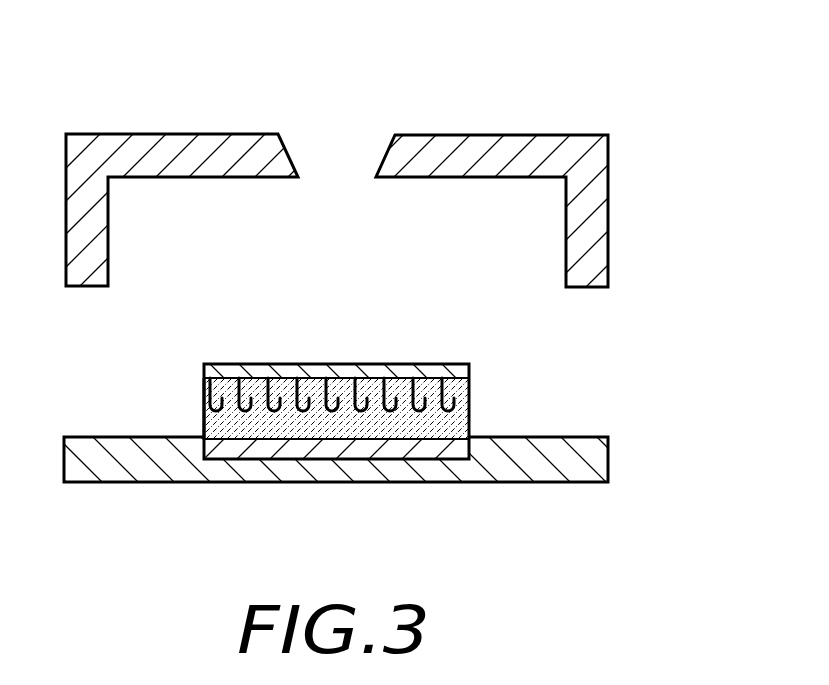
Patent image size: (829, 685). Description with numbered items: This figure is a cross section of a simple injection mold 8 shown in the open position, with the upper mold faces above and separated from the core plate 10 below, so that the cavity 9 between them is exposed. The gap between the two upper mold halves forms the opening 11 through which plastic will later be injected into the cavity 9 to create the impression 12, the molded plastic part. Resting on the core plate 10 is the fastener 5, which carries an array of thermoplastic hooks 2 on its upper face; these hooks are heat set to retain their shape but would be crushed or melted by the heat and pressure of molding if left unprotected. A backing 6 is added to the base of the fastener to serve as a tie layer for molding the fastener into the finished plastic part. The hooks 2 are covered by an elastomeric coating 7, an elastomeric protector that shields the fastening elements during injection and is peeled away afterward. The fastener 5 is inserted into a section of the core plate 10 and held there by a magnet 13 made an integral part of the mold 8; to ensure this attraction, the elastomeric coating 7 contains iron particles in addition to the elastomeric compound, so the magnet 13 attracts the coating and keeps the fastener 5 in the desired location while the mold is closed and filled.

The hooks 2 is at (345, 416).
The fastener 5 is at (192, 405).
The backing 6 is at (392, 365).
The elastomeric coating 7 is at (470, 403).
The injection mold 8 is at (150, 147).
The cavity 9 is at (152, 288).
The core plate 10 is at (597, 458).
The opening 11 is at (323, 135).
The impression 12 is at (448, 210).
The magnet 13 is at (450, 447).